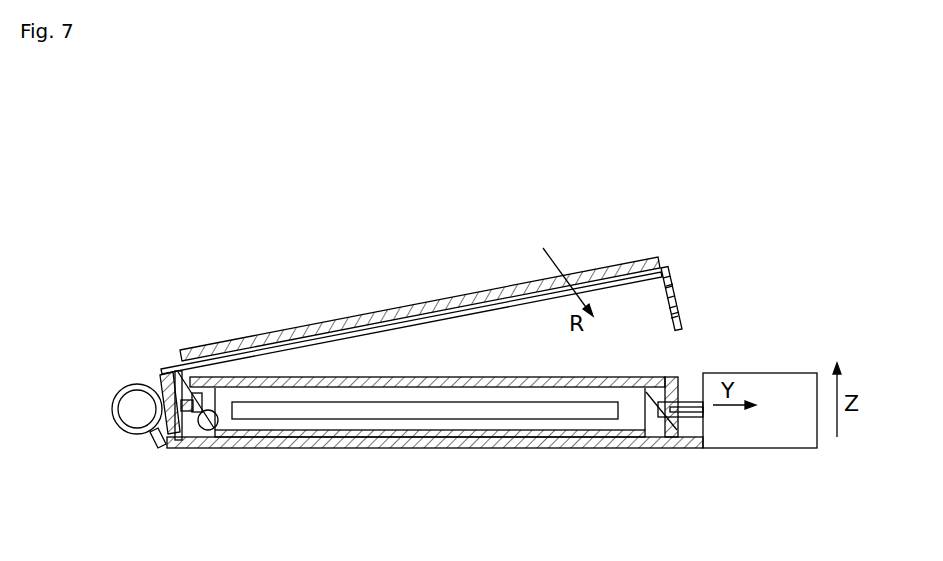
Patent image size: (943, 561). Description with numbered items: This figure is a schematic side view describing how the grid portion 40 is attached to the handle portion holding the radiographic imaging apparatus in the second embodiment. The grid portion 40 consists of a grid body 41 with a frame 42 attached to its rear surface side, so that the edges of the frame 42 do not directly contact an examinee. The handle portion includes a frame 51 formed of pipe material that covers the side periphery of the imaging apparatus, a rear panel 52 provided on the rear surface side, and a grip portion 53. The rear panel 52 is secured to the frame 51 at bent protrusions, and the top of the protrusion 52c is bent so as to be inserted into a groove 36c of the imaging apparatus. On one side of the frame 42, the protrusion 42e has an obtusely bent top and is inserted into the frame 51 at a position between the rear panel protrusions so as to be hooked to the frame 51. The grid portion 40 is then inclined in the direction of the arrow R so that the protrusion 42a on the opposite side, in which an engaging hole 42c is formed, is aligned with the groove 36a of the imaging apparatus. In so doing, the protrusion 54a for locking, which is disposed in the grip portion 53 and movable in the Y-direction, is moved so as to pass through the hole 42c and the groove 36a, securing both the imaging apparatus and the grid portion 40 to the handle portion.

The grid portion 40 is at (473, 293).
The grid body 41 is at (463, 293).
The frame 42 is at (667, 264).
The protrusion 42a is at (680, 318).
The engaging hole 42c is at (675, 291).
The protrusion 42e is at (151, 446).
The frame 51 is at (115, 392).
The rear panel 52 is at (452, 420).
The protrusion 52c is at (174, 366).
The grip portion 53 is at (733, 422).
The protrusion for locking 54a is at (688, 406).
The groove 36a is at (655, 410).
The groove 36c is at (213, 418).